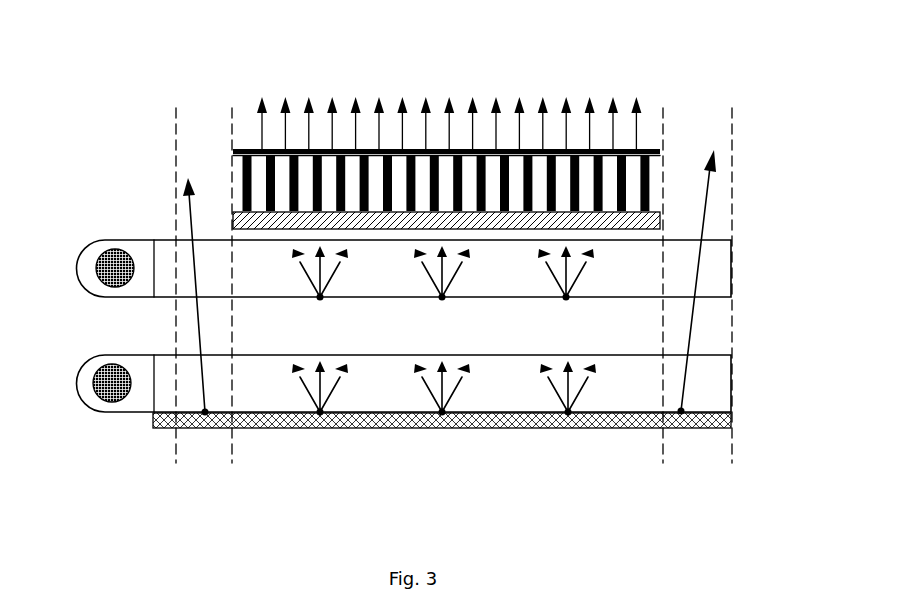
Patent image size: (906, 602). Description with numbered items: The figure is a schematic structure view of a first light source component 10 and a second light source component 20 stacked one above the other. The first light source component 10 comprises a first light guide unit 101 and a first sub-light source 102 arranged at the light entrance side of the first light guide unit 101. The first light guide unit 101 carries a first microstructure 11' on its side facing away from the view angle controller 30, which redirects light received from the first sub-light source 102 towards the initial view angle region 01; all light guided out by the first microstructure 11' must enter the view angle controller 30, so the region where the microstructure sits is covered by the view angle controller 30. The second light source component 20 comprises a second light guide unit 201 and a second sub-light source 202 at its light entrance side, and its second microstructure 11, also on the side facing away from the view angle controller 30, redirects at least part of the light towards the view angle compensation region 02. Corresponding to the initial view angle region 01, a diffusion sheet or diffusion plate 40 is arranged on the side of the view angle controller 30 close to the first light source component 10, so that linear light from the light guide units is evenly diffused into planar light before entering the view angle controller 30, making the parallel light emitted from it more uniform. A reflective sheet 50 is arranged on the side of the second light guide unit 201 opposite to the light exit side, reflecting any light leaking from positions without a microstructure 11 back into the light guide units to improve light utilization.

The initial view angle region 01 is at (233, 92).
The view angle compensation region 02 is at (176, 127).
The first light source component 10 is at (398, 211).
The first light guide unit 101 is at (160, 243).
The first sub-light source 102 is at (102, 228).
The microstructure 11 is at (444, 354).
The first microstructure 11' is at (304, 292).
The second light source component 20 is at (377, 434).
The second light guide unit 201 is at (165, 406).
The second sub-light source 202 is at (120, 404).
The view angle controller 30 is at (651, 182).
The diffusion sheet or diffusion plate 40 is at (660, 228).
The reflective sheet 50 is at (389, 430).